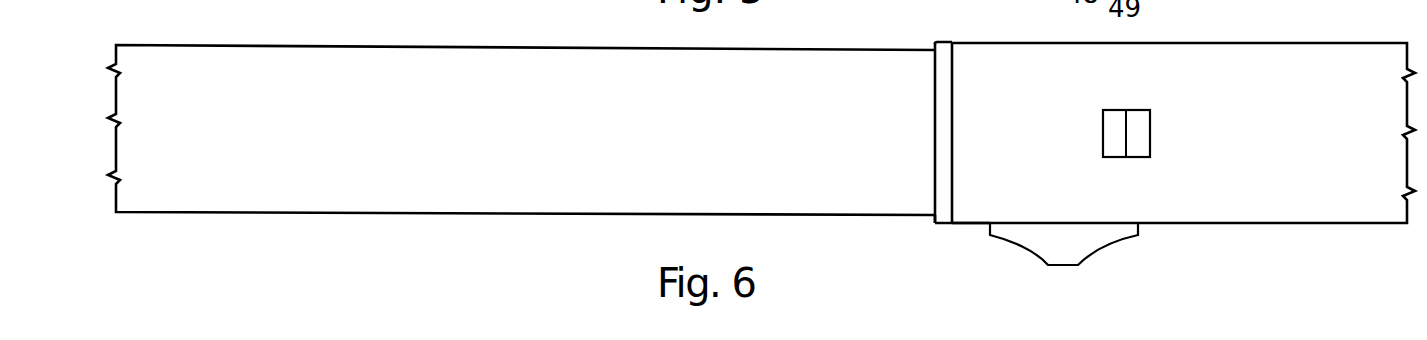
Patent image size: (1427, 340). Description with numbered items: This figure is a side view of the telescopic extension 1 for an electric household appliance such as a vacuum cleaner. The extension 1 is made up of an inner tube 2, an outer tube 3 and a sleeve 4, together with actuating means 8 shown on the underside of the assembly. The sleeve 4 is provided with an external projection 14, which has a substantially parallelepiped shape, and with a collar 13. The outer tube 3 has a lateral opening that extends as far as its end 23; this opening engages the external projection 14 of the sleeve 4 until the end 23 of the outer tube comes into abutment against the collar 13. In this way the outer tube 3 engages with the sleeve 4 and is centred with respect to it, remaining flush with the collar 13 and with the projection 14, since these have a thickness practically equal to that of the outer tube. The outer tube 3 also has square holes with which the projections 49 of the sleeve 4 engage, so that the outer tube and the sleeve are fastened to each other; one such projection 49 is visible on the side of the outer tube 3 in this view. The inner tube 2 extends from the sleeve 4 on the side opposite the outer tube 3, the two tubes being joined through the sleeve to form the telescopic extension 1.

The telescopic extension 1 is at (956, 227).
The inner tube 2 is at (575, 215).
The outer tube 3 is at (1258, 225).
The sleeve 4 is at (934, 137).
The actuating means 8 is at (1084, 251).
The collar 13 is at (945, 88).
The external projection 14 is at (974, 226).
The end 23 is at (946, 60).
The projections 49 is at (1133, 139).